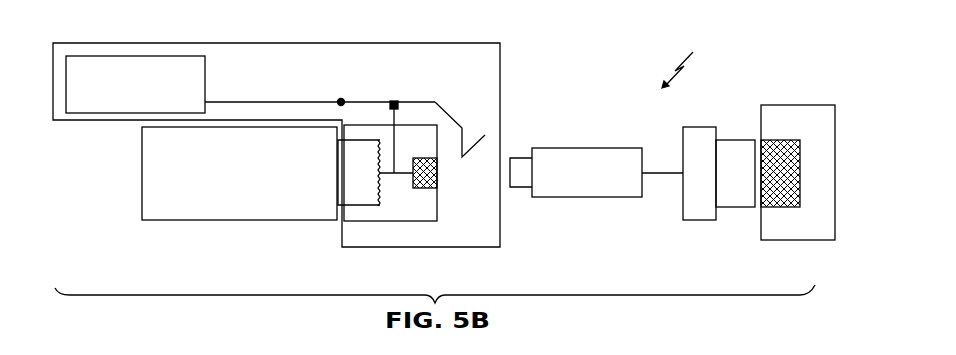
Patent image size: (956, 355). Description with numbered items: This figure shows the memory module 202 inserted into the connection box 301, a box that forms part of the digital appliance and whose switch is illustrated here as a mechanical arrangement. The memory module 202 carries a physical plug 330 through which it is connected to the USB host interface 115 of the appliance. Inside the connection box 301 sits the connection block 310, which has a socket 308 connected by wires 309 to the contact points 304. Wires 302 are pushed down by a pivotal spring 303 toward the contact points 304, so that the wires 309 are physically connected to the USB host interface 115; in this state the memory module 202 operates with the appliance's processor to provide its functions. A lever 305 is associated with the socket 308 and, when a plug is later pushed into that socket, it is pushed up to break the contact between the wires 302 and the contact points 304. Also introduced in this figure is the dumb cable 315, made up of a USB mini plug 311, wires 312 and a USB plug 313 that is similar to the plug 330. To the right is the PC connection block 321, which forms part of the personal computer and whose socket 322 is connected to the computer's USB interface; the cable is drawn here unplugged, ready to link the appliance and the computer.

The connection box 301 is at (277, 43).
The USB host interface 115 is at (122, 106).
The memory module 202 is at (225, 192).
The wires 302 is at (277, 102).
The pivotal spring 303 is at (341, 102).
The contact points 304 is at (396, 100).
The lever 305 is at (435, 102).
The socket 308 is at (437, 173).
The wires 309 is at (388, 175).
The connection block 310 is at (390, 222).
The USB mini plug 311 is at (588, 197).
The wires 312 is at (653, 170).
The USB plug 313 is at (700, 223).
The dumb cable 315 is at (684, 60).
The PC connection block 321 is at (797, 105).
The socket 322 is at (780, 207).
The physical plug 330 is at (368, 184).